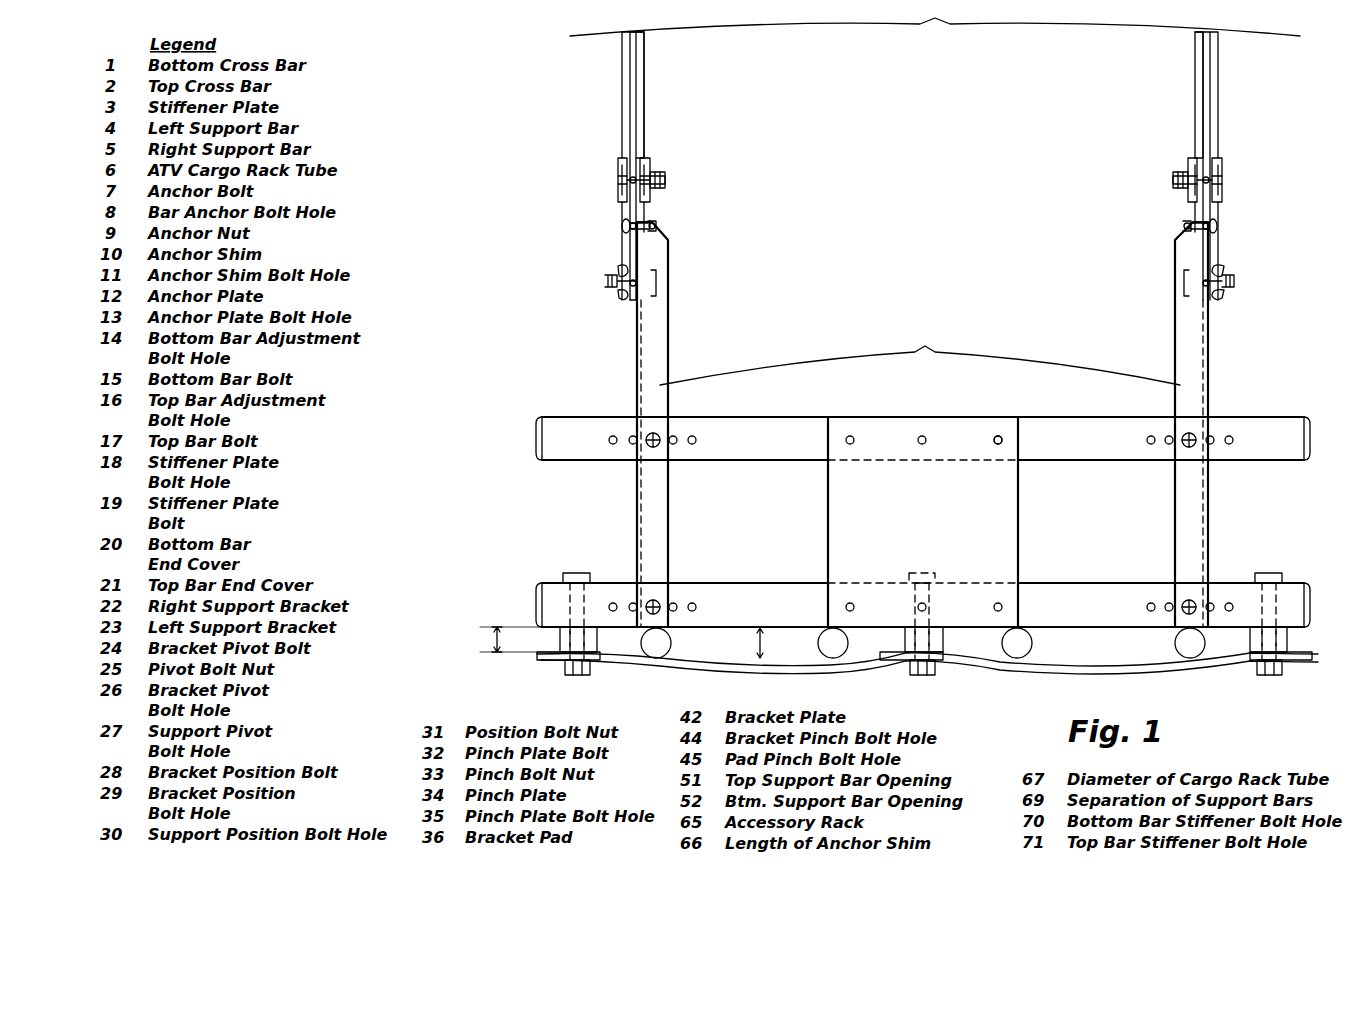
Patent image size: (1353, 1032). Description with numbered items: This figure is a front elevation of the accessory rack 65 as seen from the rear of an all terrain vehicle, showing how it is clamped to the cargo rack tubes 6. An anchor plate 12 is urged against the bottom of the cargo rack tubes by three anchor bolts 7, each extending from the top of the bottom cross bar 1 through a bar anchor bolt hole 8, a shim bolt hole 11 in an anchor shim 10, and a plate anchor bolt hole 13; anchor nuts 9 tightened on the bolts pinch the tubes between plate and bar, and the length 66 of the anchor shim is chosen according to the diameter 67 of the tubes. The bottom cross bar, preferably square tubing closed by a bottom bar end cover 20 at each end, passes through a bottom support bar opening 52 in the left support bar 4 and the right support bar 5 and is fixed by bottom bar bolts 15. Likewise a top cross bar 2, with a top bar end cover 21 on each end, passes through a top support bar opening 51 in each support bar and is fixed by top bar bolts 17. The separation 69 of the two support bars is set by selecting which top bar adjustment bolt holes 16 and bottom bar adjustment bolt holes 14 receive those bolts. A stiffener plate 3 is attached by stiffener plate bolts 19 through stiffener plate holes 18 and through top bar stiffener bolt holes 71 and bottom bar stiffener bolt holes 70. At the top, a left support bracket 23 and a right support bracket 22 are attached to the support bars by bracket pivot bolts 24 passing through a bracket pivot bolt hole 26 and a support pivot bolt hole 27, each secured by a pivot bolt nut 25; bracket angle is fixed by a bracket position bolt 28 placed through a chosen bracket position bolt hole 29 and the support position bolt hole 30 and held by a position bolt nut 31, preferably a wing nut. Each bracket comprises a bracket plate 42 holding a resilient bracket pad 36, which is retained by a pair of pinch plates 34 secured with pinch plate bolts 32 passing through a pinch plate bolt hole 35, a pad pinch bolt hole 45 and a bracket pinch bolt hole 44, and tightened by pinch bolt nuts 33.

The bottom cross bar 1 is at (1070, 583).
The top cross bar 2 is at (740, 417).
The stiffener plate 3 is at (828, 497).
The left support bar 4 is at (668, 355).
The right support bar 5 is at (1175, 345).
The cargo rack tubes 6 is at (671, 643).
The anchor bolts 7 is at (576, 572).
The bar anchor bolt hole 8 is at (570, 592).
The anchor nuts 9 is at (565, 670).
The anchor shim 10 is at (560, 640).
The shim bolt hole 11 is at (585, 642).
The anchor plate 12 is at (740, 665).
The plate anchor bolt hole 13 is at (548, 656).
The bottom bar adjustment bolt holes 14 is at (692, 603).
The bottom bar bolts 15 is at (653, 600).
The top bar adjustment bolt holes 16 is at (632, 445).
The top bar bolts 17 is at (651, 433).
The stiffener plate holes 18 is at (922, 436).
The stiffener plate bolts 19 is at (850, 436).
The bottom bar end cover 20 is at (536, 600).
The top bar end cover 21 is at (536, 440).
The right support bracket 22 is at (1203, 52).
The left support bracket 23 is at (640, 65).
The bracket pivot bolts 24 is at (628, 232).
The pivot bolt nut 25 is at (656, 226).
The bracket pivot bolt hole 26 is at (632, 252).
The support pivot bolt hole 27 is at (655, 240).
The bracket position bolt 28 is at (612, 283).
The bracket position bolt hole 29 is at (636, 302).
The support position bolt hole 30 is at (656, 285).
The position bolt nut 31 is at (620, 294).
The pinch plate bolts 32 is at (665, 183).
The pinch bolt nuts 33 is at (660, 178).
The pinch plates 34 is at (618, 175).
The pinch plate bolt hole 35 is at (618, 183).
The bracket pad 36 is at (645, 130).
The bracket plate 42 is at (637, 105).
The bracket pinch bolt hole 44 is at (628, 204).
The pad pinch bolt hole 45 is at (625, 165).
The top support bar opening 51 is at (637, 462).
The bottom support bar opening 52 is at (640, 583).
The accessory rack 65 is at (935, 18).
The length of the anchor shim 66 is at (510, 639).
The diameter of the cargo rack tubes 67 is at (746, 643).
The separation of the left support bar and the right support bar 69 is at (920, 357).
The bottom bar stiffener bolt holes 70 is at (1018, 600).
The top bar stiffener bolt holes 71 is at (998, 436).